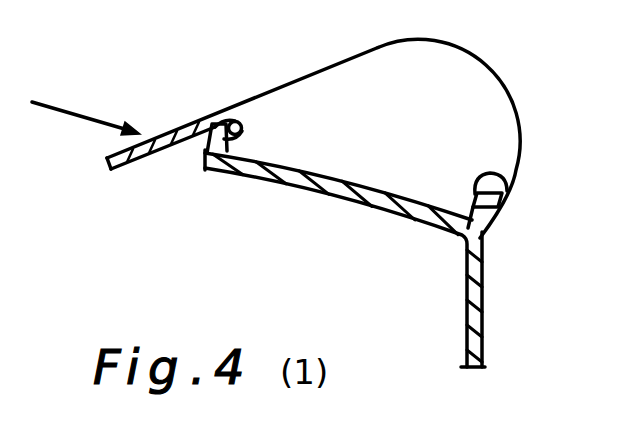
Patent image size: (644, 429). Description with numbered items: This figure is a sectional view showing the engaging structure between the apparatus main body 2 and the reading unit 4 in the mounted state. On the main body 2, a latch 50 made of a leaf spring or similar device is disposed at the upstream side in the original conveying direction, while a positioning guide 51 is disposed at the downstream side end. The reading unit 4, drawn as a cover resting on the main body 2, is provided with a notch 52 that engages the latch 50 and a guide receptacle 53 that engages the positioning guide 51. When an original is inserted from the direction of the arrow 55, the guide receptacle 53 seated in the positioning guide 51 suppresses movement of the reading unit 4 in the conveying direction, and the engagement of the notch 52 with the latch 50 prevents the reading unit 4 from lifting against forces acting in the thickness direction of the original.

The apparatus main body 2 is at (482, 297).
The reading unit 4 is at (496, 100).
The latch 50 is at (243, 140).
The positioning guide 51 is at (502, 204).
The notch 52 is at (248, 122).
The guide receptacle 53 is at (480, 178).
The arrow 55 is at (92, 117).